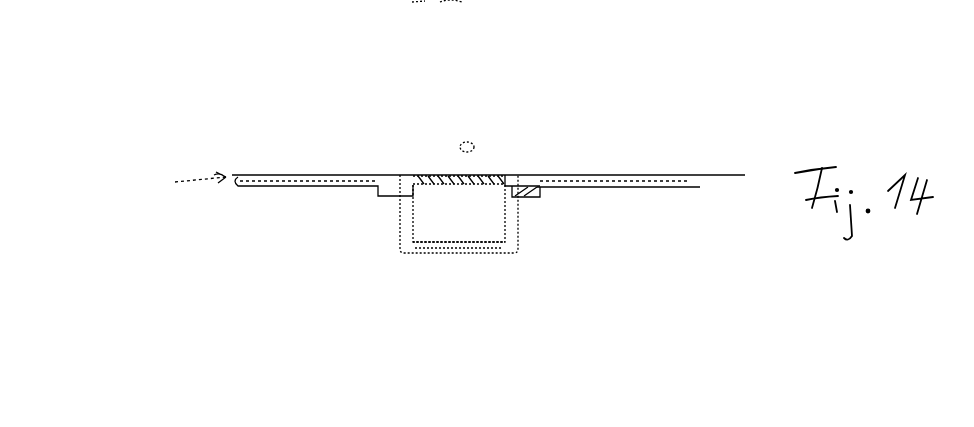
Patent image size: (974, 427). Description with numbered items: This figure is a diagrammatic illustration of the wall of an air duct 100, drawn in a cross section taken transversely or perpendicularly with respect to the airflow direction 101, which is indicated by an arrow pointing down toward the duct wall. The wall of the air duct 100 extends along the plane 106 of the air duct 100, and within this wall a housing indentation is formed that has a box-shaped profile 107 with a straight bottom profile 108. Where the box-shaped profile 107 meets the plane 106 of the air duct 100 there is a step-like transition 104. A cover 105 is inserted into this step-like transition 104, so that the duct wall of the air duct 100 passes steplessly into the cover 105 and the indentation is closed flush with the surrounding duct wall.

The air duct 100 is at (262, 190).
The airflow direction 101 is at (471, 128).
The step-like transition 104 is at (590, 88).
The cover 105 is at (422, 175).
The plane of the air duct 106 is at (90, 200).
The box-shaped profile 107 is at (465, 346).
The straight bottom profile 108 is at (490, 250).